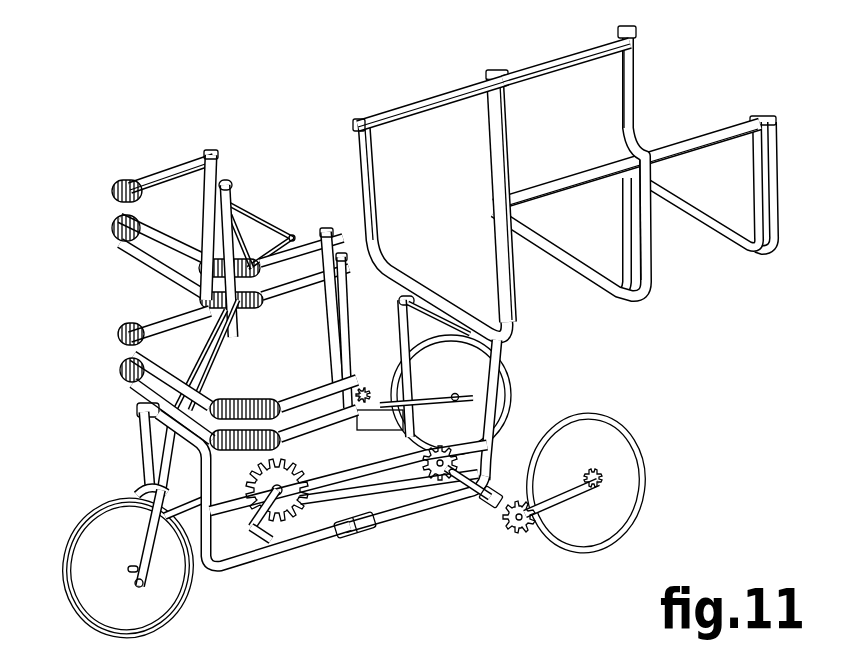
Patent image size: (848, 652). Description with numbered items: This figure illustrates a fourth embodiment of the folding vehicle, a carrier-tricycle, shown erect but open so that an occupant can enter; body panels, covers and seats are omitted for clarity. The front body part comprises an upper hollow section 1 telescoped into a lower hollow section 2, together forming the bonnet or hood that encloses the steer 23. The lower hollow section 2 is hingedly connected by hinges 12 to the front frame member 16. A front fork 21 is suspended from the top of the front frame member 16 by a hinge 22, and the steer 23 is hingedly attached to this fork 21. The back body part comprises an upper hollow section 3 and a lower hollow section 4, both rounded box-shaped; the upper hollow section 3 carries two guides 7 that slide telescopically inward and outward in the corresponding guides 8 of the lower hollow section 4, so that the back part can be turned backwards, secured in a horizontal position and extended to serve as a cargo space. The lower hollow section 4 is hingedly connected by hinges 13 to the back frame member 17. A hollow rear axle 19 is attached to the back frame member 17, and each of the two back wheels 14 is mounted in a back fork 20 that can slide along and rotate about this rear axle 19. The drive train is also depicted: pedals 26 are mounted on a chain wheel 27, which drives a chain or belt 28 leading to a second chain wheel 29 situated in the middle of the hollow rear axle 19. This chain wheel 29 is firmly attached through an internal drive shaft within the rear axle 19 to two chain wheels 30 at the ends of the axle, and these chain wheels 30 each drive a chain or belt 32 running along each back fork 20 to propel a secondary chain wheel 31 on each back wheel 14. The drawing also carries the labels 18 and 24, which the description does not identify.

The upper hollow section 1 is at (165, 243).
The lower hollow section 2 is at (162, 278).
The upper hollow section 3 is at (636, 85).
The lower hollow section 4 is at (510, 297).
The guides 7 is at (548, 72).
The guides 8 is at (420, 103).
The hinges 12 is at (140, 410).
The hinges 13 is at (505, 350).
The back wheels 14 is at (605, 518).
The front frame member 16 is at (308, 540).
The back frame member 17 is at (413, 504).
The coupling sleeve 18 is at (343, 534).
The rear axle 19 is at (478, 495).
The back fork 20 is at (492, 504).
The front fork 21 is at (165, 475).
The hinge 22 is at (150, 438).
The steer 23 is at (130, 345).
The front wheel 24 is at (105, 572).
The pedals 26 is at (258, 542).
The chain wheel 27 is at (288, 510).
The chain or belt 28 is at (390, 493).
The second chain wheel 29 is at (438, 481).
The chain wheels 30 is at (520, 535).
The secondary chain wheel 31 is at (602, 477).
The chain or belt 32 is at (567, 545).